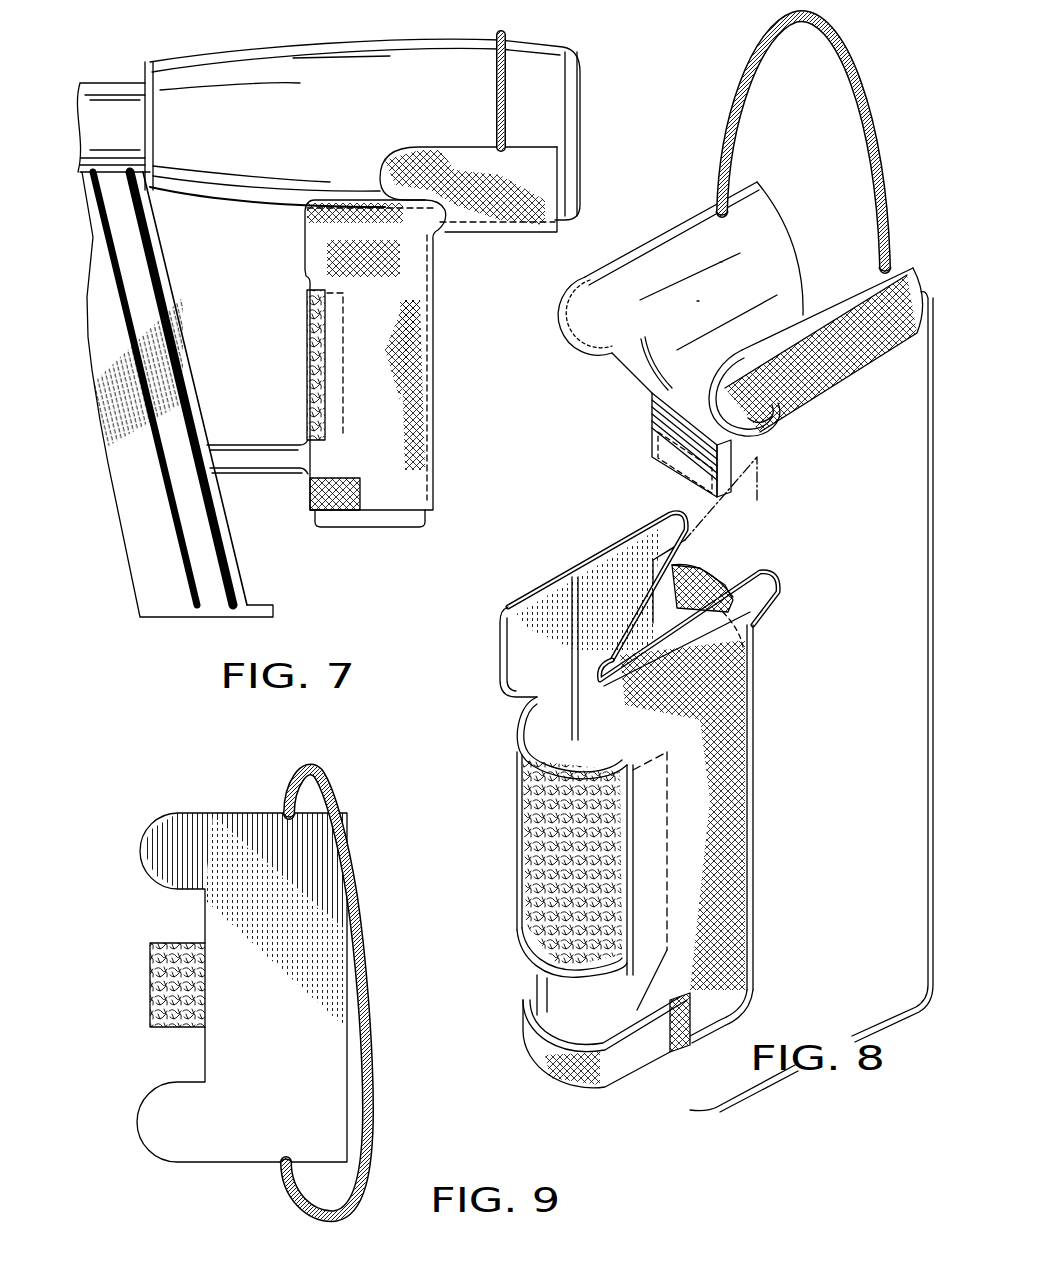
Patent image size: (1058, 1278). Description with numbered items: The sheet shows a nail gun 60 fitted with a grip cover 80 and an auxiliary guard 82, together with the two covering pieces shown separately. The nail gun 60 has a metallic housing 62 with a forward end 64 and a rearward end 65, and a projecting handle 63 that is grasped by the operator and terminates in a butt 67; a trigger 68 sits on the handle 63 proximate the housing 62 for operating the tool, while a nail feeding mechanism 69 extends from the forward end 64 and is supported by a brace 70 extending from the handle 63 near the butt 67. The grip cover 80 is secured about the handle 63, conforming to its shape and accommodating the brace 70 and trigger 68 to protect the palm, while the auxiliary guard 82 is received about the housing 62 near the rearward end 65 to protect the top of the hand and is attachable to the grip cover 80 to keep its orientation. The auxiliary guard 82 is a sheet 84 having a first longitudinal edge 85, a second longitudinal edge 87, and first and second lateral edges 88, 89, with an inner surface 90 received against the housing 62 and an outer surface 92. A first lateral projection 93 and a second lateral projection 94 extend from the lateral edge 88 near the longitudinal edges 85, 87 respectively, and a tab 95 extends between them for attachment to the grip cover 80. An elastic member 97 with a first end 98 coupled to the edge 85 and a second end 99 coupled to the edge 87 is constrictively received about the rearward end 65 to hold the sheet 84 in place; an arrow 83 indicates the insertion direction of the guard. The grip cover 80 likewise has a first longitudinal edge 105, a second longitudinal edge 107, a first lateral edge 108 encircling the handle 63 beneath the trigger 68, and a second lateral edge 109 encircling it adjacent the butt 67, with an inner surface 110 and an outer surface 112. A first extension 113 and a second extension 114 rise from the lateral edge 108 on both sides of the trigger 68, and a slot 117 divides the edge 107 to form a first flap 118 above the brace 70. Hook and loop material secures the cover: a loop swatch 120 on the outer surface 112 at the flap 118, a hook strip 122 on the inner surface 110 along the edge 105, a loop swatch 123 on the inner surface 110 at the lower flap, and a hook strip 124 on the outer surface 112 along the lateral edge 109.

In FIG. 7, the nail gun 60 is at (351, 308).
In FIG. 7, the metallic housing 62 is at (313, 55).
In FIG. 7, the projecting handle 63 is at (427, 427).
In FIG. 7, the forward end 64 is at (195, 55).
In FIG. 7, the rearward end 65 is at (585, 62).
In FIG. 7, the butt 67 is at (403, 525).
In FIG. 7, the trigger 68 is at (300, 262).
In FIG. 7, the nail feeding mechanism 69 is at (173, 343).
In FIG. 7, the brace 70 is at (267, 443).
In FIG. 7, the grip cover 80 is at (418, 300).
In FIG. 8, the grip cover 80 is at (636, 805).
In FIG. 7, the auxiliary guard 82 is at (497, 233).
In FIG. 8, the auxiliary guard 82 is at (733, 277).
In FIG. 9, the auxiliary guard 82 is at (257, 985).
In FIG. 8, the insertion direction 83 is at (752, 480).
In FIG. 8, the sheet 84 is at (760, 258).
In FIG. 9, the sheet 84 is at (183, 812).
In FIG. 7, the first longitudinal edge 85 is at (473, 147).
In FIG. 8, the first longitudinal edge 85 is at (833, 293).
In FIG. 9, the first longitudinal edge 85 is at (261, 810).
In FIG. 8, the second longitudinal edge 87 is at (653, 240).
In FIG. 9, the second longitudinal edge 87 is at (242, 1168).
In FIG. 8, the first lateral edge 88 is at (655, 367).
In FIG. 9, the first lateral edge 88 is at (199, 1041).
In FIG. 8, the second lateral edge 89 is at (797, 287).
In FIG. 9, the second lateral edge 89 is at (351, 1123).
In FIG. 8, the inner surface 90 is at (699, 303).
In FIG. 9, the outer surface 92 is at (251, 1056).
In FIG. 8, the first lateral projection 93 is at (717, 363).
In FIG. 9, the first lateral projection 93 is at (142, 836).
In FIG. 8, the second lateral projection 94 is at (598, 340).
In FIG. 9, the second lateral projection 94 is at (142, 1131).
In FIG. 8, the tab 95 is at (650, 442).
In FIG. 9, the tab 95 is at (191, 935).
In FIG. 8, the elastic member 97 is at (843, 43).
In FIG. 9, the elastic member 97 is at (367, 1013).
In FIG. 7, the first end 98 is at (507, 147).
In FIG. 8, the first end 98 is at (893, 267).
In FIG. 9, the first end 98 is at (295, 818).
In FIG. 8, the second end 99 is at (713, 203).
In FIG. 9, the second end 99 is at (289, 1156).
In FIG. 8, the first longitudinal edge 105 is at (640, 803).
In FIG. 8, the second longitudinal edge 107 is at (673, 1047).
In FIG. 8, the first lateral edge 108 is at (507, 703).
In FIG. 8, the second lateral edge 109 is at (747, 997).
In FIG. 8, the inner surface 110 is at (530, 707).
In FIG. 8, the outer surface 112 is at (750, 837).
In FIG. 8, the first extension 113 is at (783, 582).
In FIG. 8, the second extension 114 is at (563, 577).
In FIG. 8, the slot 117 is at (530, 1010).
In FIG. 8, the first flap 118 is at (545, 864).
In FIG. 8, the swatch 120 is at (517, 873).
In FIG. 8, the strip 122 is at (620, 767).
In FIG. 8, the swatch 123 is at (603, 1010).
In FIG. 8, the strip 124 is at (710, 1033).